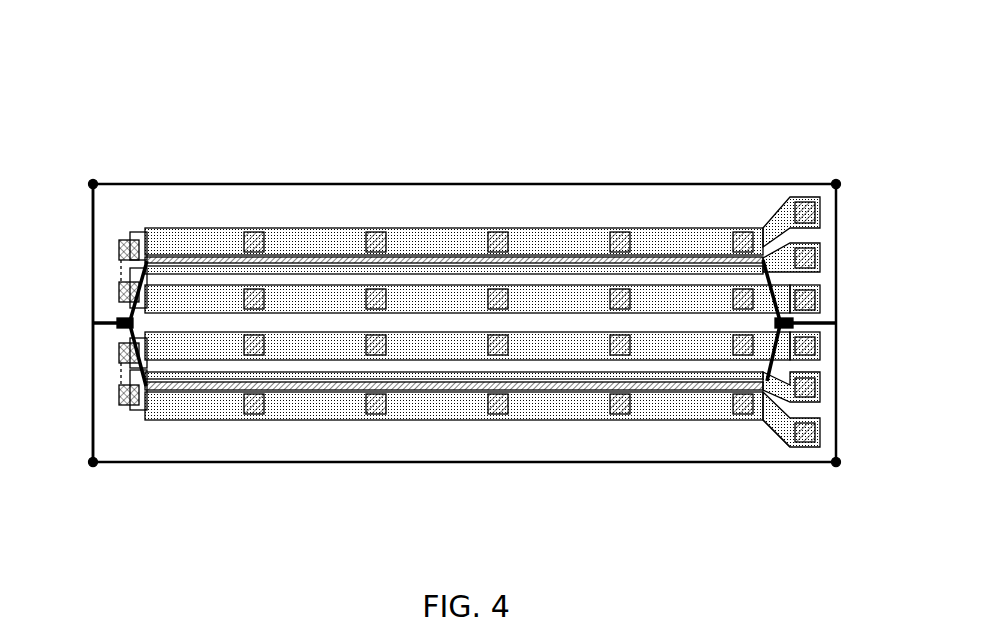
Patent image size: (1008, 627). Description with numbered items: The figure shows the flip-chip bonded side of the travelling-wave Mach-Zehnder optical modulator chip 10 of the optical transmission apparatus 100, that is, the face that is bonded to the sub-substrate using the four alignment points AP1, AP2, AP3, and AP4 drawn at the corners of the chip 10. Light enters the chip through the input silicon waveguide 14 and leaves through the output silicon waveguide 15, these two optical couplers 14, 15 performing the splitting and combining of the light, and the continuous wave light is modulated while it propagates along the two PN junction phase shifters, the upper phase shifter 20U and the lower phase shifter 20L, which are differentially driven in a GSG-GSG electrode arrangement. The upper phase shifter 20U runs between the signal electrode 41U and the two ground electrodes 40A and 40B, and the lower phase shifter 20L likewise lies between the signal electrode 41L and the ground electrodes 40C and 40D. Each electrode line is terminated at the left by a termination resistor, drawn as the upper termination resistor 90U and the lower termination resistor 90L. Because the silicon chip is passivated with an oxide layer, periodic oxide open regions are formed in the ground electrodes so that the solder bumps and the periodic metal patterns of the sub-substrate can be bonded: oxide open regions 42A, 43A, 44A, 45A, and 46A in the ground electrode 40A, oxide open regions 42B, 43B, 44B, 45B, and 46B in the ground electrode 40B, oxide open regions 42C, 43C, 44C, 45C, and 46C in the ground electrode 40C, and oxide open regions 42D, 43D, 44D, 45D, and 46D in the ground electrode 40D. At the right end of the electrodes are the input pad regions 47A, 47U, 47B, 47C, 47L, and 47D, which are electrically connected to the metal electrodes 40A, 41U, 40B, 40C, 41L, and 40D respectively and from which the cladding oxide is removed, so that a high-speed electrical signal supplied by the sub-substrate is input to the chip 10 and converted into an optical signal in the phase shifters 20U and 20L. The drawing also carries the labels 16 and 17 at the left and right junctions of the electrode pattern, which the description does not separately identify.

The optical transmission apparatus 100 is at (824, 41).
The travelling-wave Mach-Zehnder optical modulator chip 10 is at (93, 203).
The input silicon waveguide 14 is at (838, 318).
The output silicon waveguide 15 is at (97, 327).
The first junction 16 is at (117, 320).
The connecting portion 17 is at (784, 440).
The PN junction phase shifter U 20U is at (310, 258).
The PN junction phase shifter L 20L is at (310, 388).
The ground electrode 40A is at (203, 240).
The ground electrode 40B is at (187, 297).
The ground electrode 40C is at (187, 350).
The ground electrode 40D is at (203, 407).
The signal electrode 41U is at (162, 268).
The signal electrode 41L is at (162, 377).
The oxide open region 42A is at (252, 240).
The oxide open region 42B is at (253, 297).
The oxide open region 42C is at (252, 347).
The oxide open region 42D is at (252, 405).
The oxide open region 43A is at (373, 237).
The oxide open region 43B is at (373, 299).
The oxide open region 43C is at (373, 347).
The oxide open region 43D is at (375, 405).
The oxide open region 44A is at (497, 240).
The oxide open region 44B is at (497, 299).
The oxide open region 44C is at (497, 347).
The oxide open region 44D is at (497, 405).
The oxide open region 45A is at (619, 240).
The oxide open region 45B is at (620, 299).
The oxide open region 45C is at (620, 347).
The oxide open region 45D is at (620, 405).
The oxide open region 46A is at (742, 240).
The oxide open region 46B is at (743, 299).
The oxide open region 46C is at (743, 347).
The oxide open region 46D is at (743, 405).
The input pad region 47A is at (812, 213).
The input pad region 47U is at (812, 259).
The input pad region 47B is at (812, 298).
The input pad region 47C is at (812, 348).
The input pad region 47L is at (812, 390).
The input pad region 47D is at (812, 435).
The termination resistor 90U is at (119, 250).
The termination resistor 90L is at (119, 376).
The alignment point AP1 is at (92, 175).
The alignment point AP2 is at (94, 477).
The alignment point AP3 is at (835, 477).
The alignment point AP4 is at (835, 175).